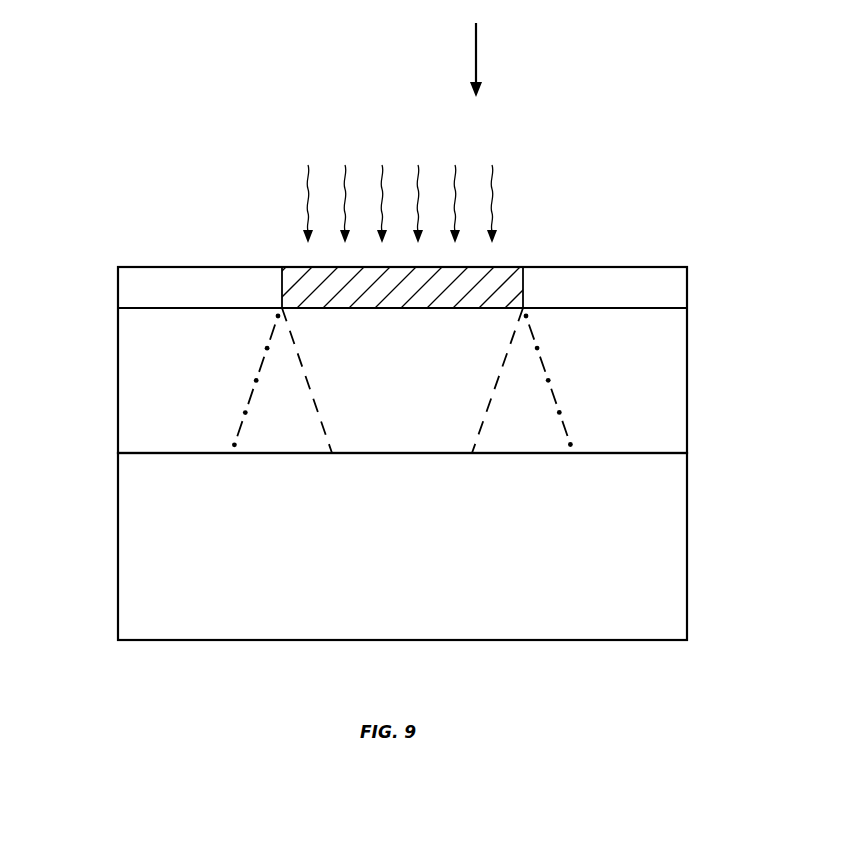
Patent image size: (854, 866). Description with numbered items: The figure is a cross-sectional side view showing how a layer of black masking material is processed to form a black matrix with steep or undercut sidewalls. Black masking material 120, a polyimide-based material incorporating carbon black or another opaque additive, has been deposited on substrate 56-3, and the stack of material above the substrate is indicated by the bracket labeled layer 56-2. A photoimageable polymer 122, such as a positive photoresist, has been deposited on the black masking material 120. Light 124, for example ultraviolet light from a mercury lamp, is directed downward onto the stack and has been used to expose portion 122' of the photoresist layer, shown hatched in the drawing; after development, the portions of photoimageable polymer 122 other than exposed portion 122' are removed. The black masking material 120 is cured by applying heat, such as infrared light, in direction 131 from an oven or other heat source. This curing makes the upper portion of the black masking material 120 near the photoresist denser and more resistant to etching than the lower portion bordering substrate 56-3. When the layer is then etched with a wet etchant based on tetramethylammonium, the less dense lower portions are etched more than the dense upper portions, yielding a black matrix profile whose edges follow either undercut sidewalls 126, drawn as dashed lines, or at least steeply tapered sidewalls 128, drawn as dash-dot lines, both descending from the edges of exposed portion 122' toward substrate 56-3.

The layer 56-2 is at (712, 267).
The substrate 56-3 is at (675, 530).
The black masking material 120 is at (128, 370).
The photoimageable polymer 122 is at (371, 288).
The exposed portion 122' is at (402, 260).
The light 124 is at (307, 206).
The undercut sidewalls 126 is at (305, 370).
The steeply tapered sidewalls 128 is at (245, 400).
The direction 131 is at (478, 47).